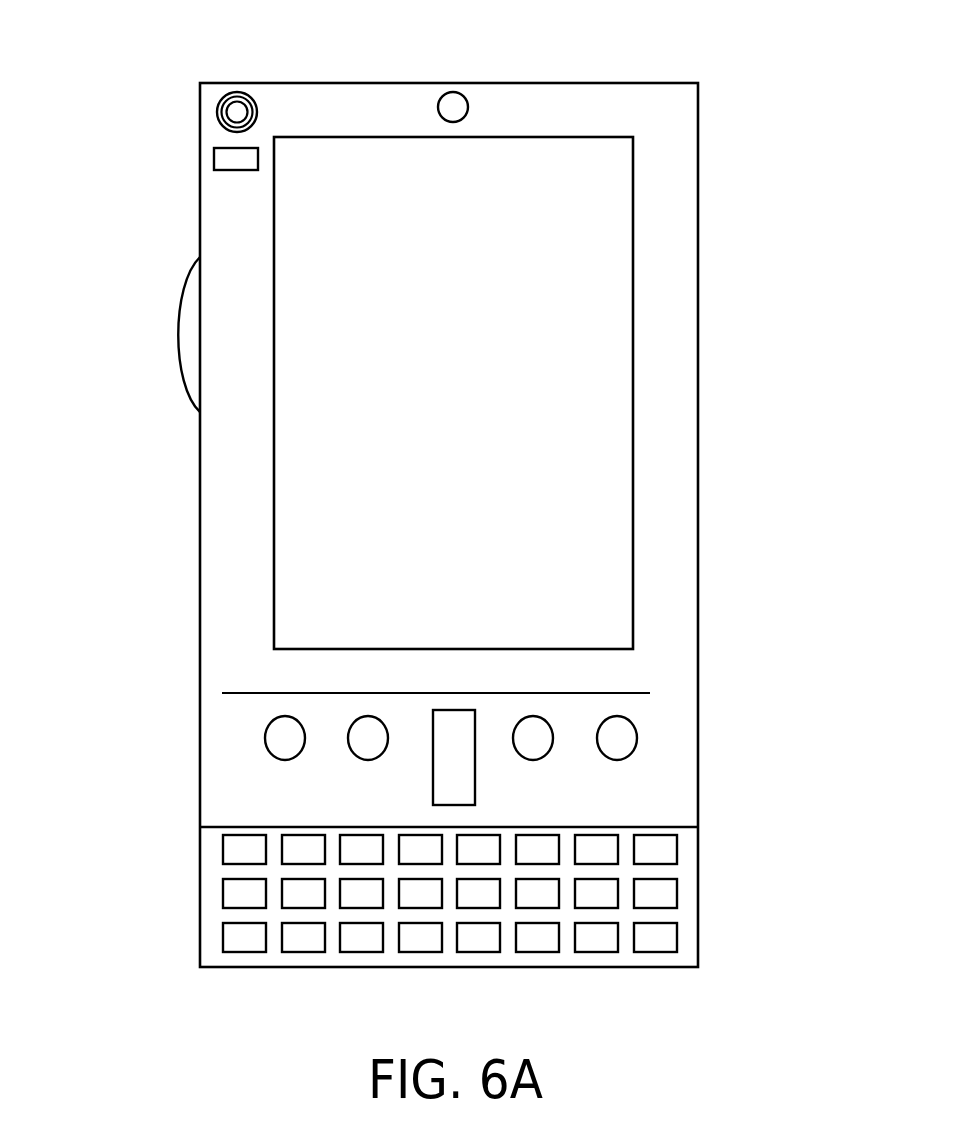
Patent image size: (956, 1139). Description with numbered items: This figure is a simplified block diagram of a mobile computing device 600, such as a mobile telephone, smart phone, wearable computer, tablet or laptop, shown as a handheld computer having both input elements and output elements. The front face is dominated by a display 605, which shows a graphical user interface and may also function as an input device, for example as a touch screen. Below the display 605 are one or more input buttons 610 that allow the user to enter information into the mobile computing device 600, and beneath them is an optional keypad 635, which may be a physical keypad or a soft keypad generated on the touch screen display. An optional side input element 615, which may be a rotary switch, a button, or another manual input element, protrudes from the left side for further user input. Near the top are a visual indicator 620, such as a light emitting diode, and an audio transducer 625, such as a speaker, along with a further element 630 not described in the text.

The mobile computing device 600 is at (685, 100).
The display 605 is at (385, 562).
The input buttons 610 is at (452, 765).
The side input element 615 is at (190, 332).
The visual indicator 620 is at (217, 163).
The audio transducer 625 is at (215, 113).
The speaker 630 is at (463, 105).
The keypad 635 is at (210, 942).